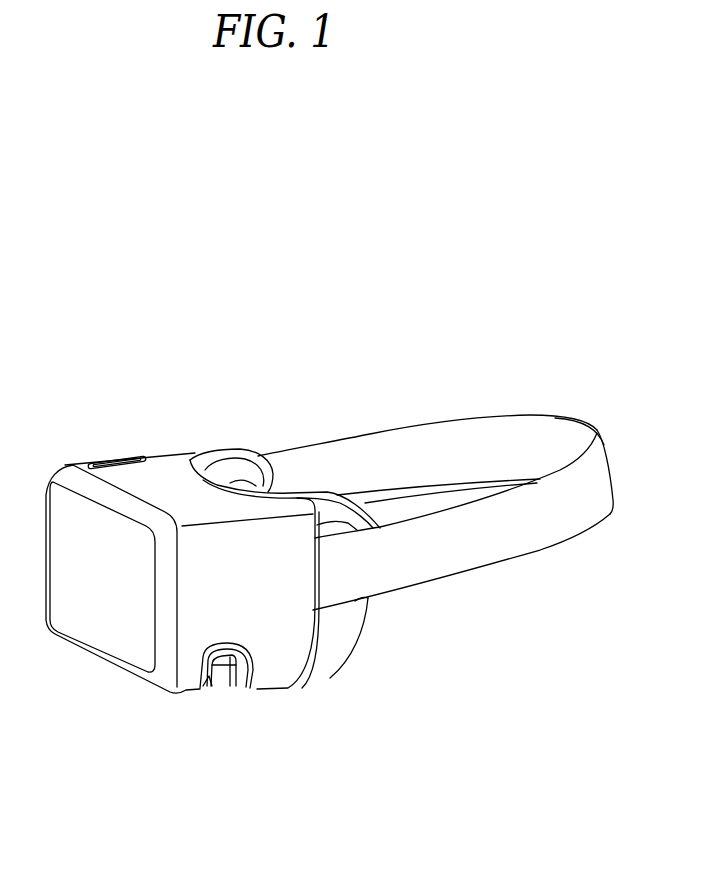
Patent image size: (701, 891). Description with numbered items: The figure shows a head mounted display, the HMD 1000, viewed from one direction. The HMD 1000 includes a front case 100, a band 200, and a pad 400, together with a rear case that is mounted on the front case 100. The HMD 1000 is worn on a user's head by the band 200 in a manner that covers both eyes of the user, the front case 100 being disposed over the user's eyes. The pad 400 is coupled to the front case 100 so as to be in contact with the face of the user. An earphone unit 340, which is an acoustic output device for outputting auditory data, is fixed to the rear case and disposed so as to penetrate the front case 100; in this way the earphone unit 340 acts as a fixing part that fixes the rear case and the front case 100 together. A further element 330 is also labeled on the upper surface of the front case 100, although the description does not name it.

The head mounted display (HMD) 1000 is at (273, 314).
The front case 100 is at (108, 643).
The band 200 is at (533, 442).
The top slot / button on display unit 330 is at (103, 452).
The earphone unit 340 is at (223, 680).
The pad 400 is at (350, 623).